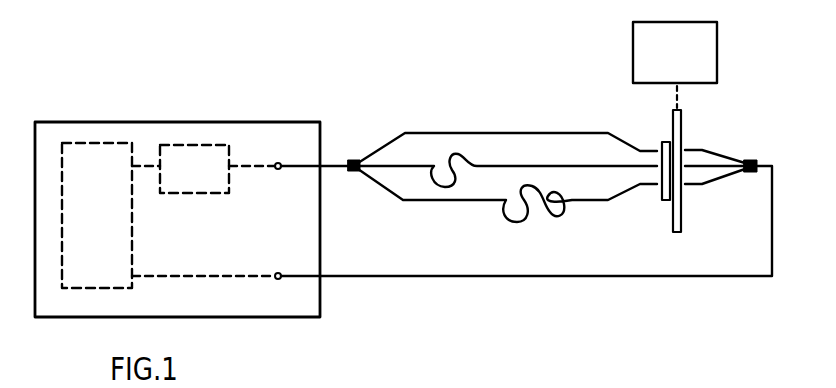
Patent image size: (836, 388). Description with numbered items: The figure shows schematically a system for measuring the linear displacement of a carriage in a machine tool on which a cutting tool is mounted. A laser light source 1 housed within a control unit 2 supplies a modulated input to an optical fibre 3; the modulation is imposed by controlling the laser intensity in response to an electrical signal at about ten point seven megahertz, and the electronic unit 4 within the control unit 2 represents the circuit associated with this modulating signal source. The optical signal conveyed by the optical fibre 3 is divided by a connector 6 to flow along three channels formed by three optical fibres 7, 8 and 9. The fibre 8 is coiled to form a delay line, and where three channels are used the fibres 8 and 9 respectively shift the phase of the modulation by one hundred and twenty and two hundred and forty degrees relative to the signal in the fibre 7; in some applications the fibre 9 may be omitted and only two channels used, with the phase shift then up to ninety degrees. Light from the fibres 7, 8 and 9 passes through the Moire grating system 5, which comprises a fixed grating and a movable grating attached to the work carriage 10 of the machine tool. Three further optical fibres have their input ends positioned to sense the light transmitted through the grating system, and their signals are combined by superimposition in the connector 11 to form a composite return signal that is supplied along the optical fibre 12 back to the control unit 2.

The laser light source 1 is at (197, 185).
The control unit 2 is at (132, 121).
The optical fibre 3 is at (326, 163).
The electronic unit 4 is at (100, 240).
The Moire grating system 5 is at (678, 210).
The connector 6 is at (357, 157).
The optical fibre 7 is at (412, 131).
The optical fibre 8 is at (388, 168).
The optical fibre 9 is at (390, 193).
The work carriage 10 is at (678, 67).
The connector 11 is at (752, 158).
The optical fibre 12 is at (430, 279).